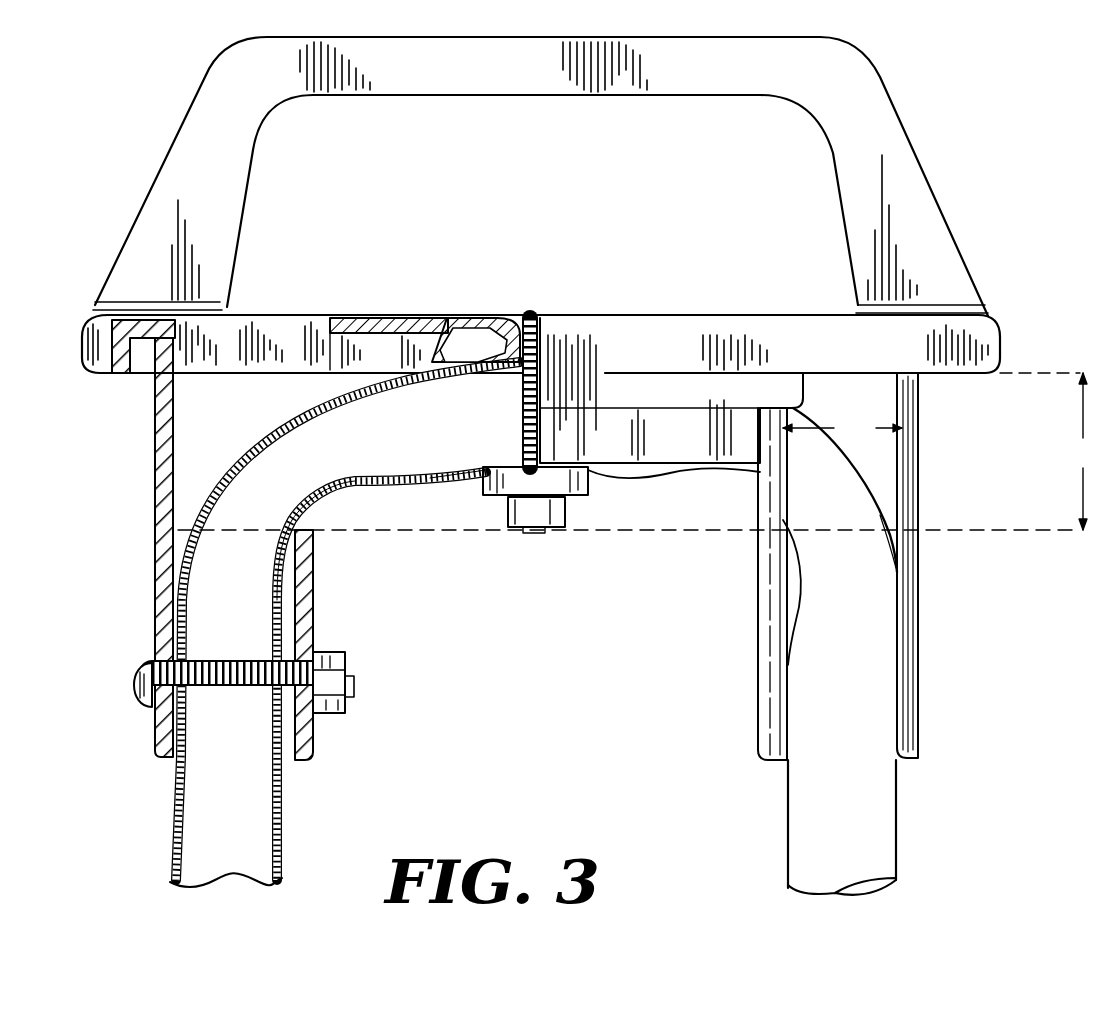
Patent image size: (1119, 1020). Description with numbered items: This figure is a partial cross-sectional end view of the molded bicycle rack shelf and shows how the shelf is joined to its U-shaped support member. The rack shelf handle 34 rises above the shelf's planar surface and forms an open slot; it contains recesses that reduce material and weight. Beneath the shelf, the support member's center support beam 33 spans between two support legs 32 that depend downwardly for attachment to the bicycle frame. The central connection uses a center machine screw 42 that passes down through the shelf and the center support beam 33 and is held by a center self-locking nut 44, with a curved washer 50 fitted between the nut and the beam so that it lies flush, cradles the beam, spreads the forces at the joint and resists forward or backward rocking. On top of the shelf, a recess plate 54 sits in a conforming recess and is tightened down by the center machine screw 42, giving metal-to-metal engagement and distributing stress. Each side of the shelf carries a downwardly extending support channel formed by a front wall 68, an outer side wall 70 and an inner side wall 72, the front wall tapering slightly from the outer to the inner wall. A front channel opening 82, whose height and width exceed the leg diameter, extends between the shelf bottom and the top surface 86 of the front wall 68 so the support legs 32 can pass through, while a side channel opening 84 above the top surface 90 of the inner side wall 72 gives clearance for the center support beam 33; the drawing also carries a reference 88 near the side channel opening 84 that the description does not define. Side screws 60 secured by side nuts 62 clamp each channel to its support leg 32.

The support leg 32 is at (868, 824).
The center support beam 33 is at (462, 480).
The rack shelf handle 34 is at (748, 50).
The center machine screw 42 is at (528, 318).
The center self-locking nut 44 is at (565, 513).
The curved washer 50 is at (517, 482).
The recess plate 54 is at (411, 318).
The side screw 60 is at (137, 690).
The side nut 62 is at (337, 660).
The front wall 68 is at (181, 530).
The outer side wall 70 is at (160, 592).
The inner side wall 72 is at (308, 605).
The front channel opening 82 is at (866, 452).
The side channel opening 84 is at (324, 508).
The top surface of front wall 86 is at (893, 528).
The bend 88 is at (307, 527).
The top surface of inner side wall 90 is at (618, 437).